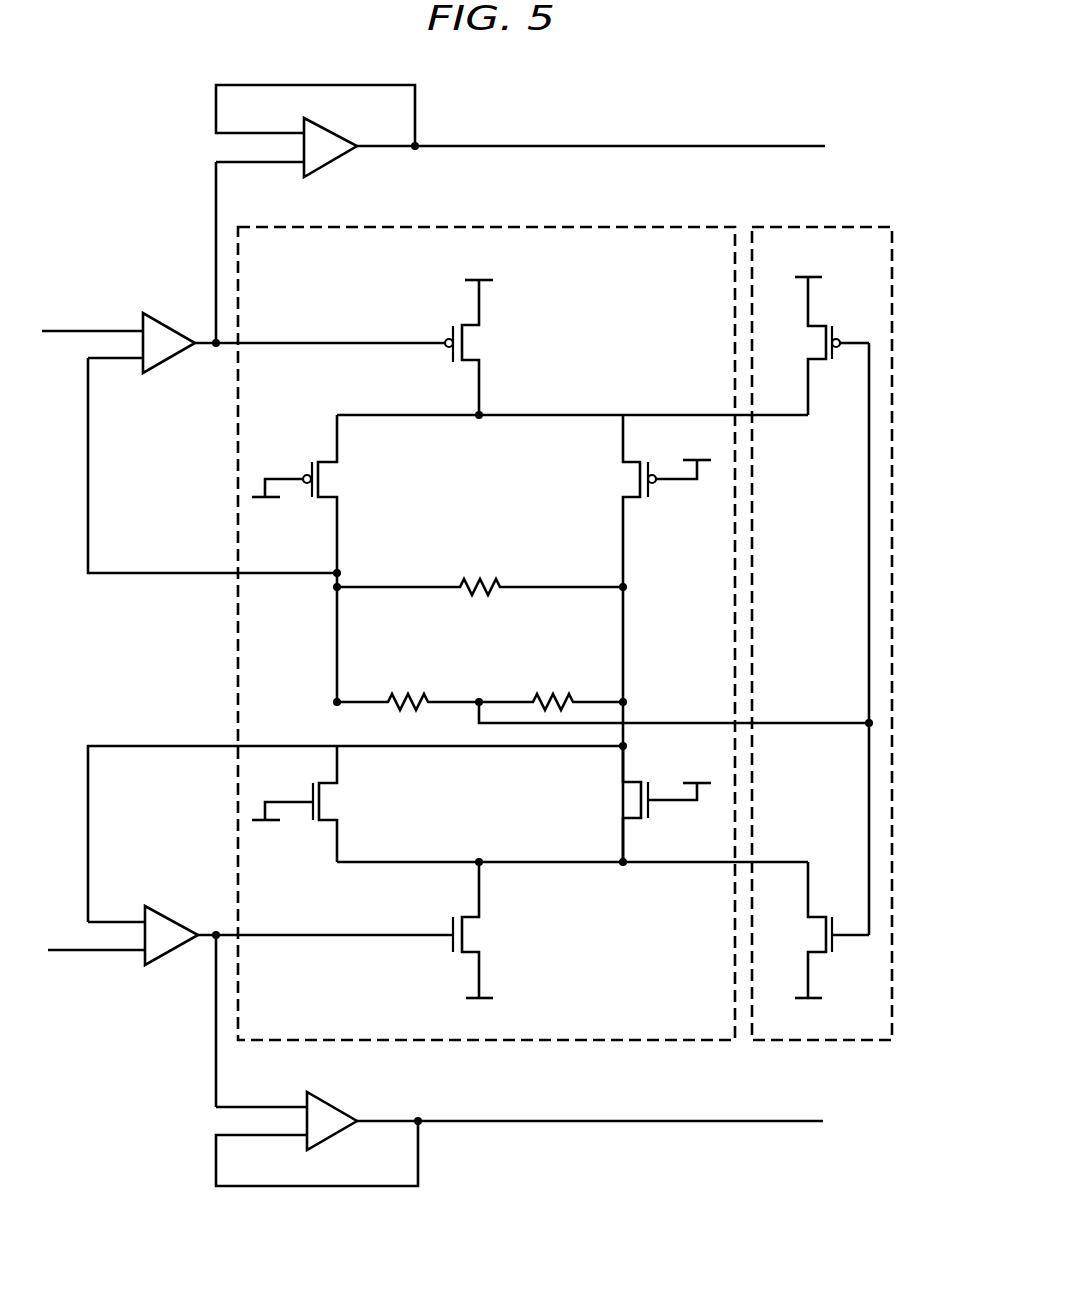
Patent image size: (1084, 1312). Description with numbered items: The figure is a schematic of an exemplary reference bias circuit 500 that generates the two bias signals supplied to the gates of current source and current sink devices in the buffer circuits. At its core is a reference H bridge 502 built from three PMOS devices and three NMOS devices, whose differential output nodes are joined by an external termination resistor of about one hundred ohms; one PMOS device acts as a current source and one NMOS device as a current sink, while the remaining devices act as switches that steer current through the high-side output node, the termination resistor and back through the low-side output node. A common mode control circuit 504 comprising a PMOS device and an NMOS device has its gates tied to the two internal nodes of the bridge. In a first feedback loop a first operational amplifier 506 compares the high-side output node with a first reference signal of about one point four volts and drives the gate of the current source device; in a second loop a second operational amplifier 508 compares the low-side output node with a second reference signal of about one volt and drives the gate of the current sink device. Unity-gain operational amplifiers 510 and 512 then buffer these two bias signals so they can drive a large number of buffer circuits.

The reference bias circuit 500 is at (183, 80).
The reference H bridge 502 is at (579, 227).
The common mode control circuit 504 is at (829, 223).
The first operational amplifier 506 is at (164, 360).
The second operational amplifier 508 is at (166, 908).
The operational amplifier 510 is at (334, 162).
The operational amplifier 512 is at (327, 1096).